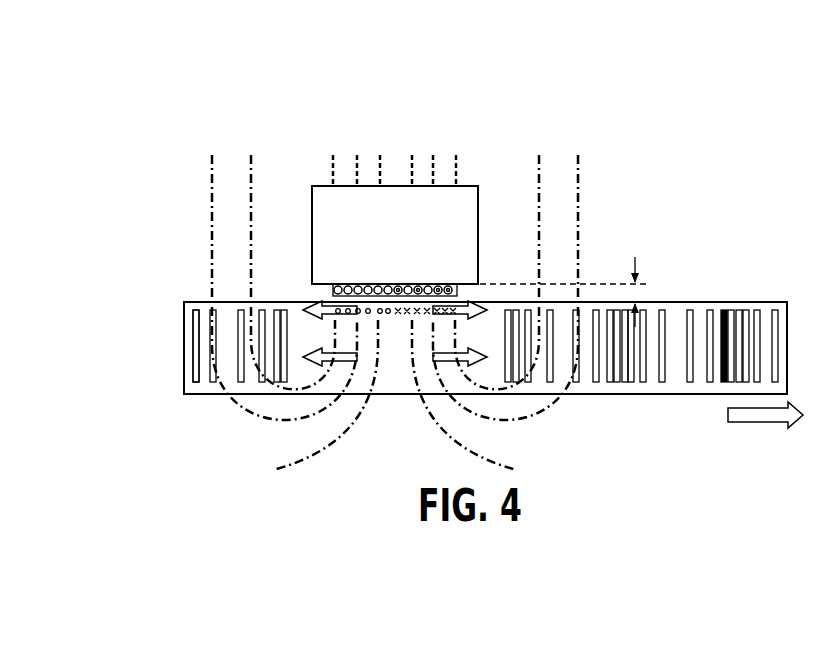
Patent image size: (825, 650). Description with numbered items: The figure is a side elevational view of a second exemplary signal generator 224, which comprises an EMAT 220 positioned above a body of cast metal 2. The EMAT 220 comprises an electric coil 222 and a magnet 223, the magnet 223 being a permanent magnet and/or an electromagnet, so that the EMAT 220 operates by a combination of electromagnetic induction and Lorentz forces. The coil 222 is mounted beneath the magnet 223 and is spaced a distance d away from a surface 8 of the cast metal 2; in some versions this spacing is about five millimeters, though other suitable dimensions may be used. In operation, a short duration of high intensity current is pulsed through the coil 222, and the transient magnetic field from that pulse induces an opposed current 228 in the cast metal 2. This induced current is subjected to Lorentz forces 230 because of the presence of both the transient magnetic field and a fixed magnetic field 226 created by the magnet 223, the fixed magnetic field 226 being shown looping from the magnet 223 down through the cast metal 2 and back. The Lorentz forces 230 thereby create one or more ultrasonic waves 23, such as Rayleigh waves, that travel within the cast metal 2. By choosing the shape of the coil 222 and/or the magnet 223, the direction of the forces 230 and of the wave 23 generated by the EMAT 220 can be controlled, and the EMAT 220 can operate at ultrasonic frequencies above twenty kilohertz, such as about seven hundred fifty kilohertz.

The signal generator 224 is at (236, 84).
The EMAT 220 is at (318, 182).
The electric coil 222 is at (458, 284).
The magnet 223 is at (472, 186).
The fixed magnetic field 226 is at (247, 228).
The surface 8 is at (717, 302).
The cast metal 2 is at (206, 396).
The opposed current 228 is at (398, 316).
The Lorentz forces 230 is at (473, 358).
The ultrasonic waves 23 is at (760, 416).
The distance d is at (566, 292).